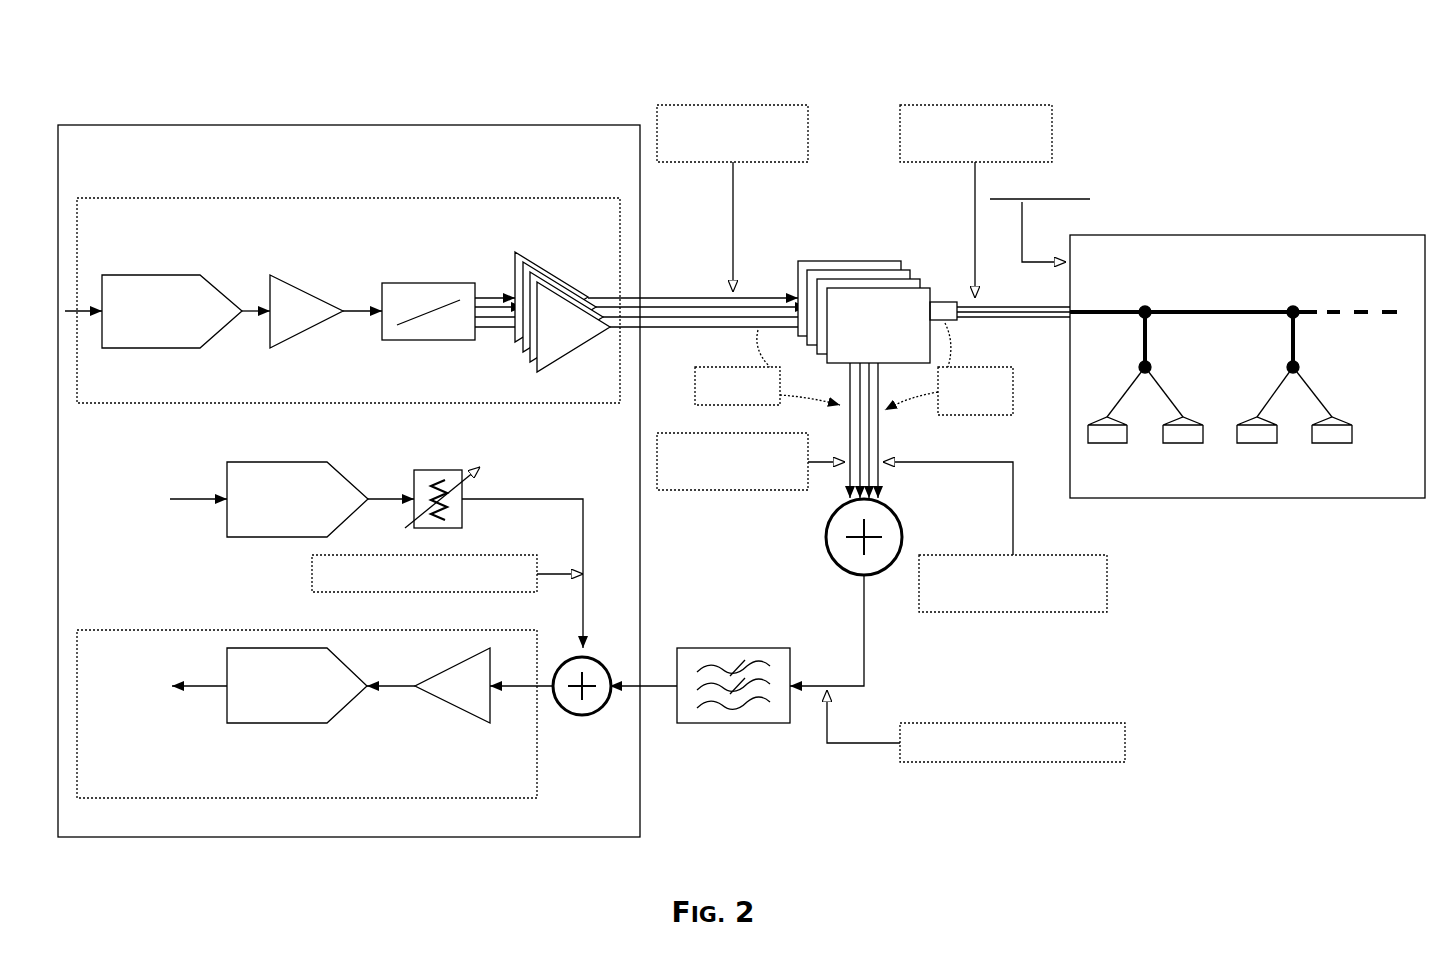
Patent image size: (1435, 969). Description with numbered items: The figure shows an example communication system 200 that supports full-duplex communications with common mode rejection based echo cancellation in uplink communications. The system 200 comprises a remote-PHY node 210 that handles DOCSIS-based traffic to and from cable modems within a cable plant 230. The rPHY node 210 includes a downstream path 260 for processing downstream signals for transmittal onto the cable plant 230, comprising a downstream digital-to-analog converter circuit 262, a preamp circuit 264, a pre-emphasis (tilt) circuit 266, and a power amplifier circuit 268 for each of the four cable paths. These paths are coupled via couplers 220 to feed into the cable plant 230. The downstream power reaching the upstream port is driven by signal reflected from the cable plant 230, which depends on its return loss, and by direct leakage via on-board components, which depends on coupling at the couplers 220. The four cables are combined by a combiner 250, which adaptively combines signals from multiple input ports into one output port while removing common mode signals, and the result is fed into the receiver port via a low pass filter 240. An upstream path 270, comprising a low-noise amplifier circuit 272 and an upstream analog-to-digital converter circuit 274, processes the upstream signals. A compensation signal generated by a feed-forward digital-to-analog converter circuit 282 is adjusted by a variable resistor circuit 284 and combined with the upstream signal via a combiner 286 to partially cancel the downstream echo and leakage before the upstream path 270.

The communication system 200 is at (185, 78).
The remote-PHY node 210 is at (378, 126).
The couplers 220 is at (862, 346).
The cable plant 230 is at (1348, 235).
The low pass filter 240 is at (733, 723).
The combiner 250 is at (840, 567).
The downstream path 260 is at (334, 393).
The downstream digital-to-analog converter circuit 262 is at (155, 275).
The preamp circuit 264 is at (304, 291).
The pre-emphasis (tilt) circuit 266 is at (427, 282).
The power amplifier circuit 268 is at (549, 273).
The upstream path 270 is at (331, 787).
The low-noise amplifier circuit 272 is at (457, 723).
The upstream analog-to-digital converter circuit 274 is at (271, 723).
The feed-forward digital-to-analog converter circuit 282 is at (276, 462).
The variable resistor circuit 284 is at (438, 470).
The combiner 286 is at (583, 715).